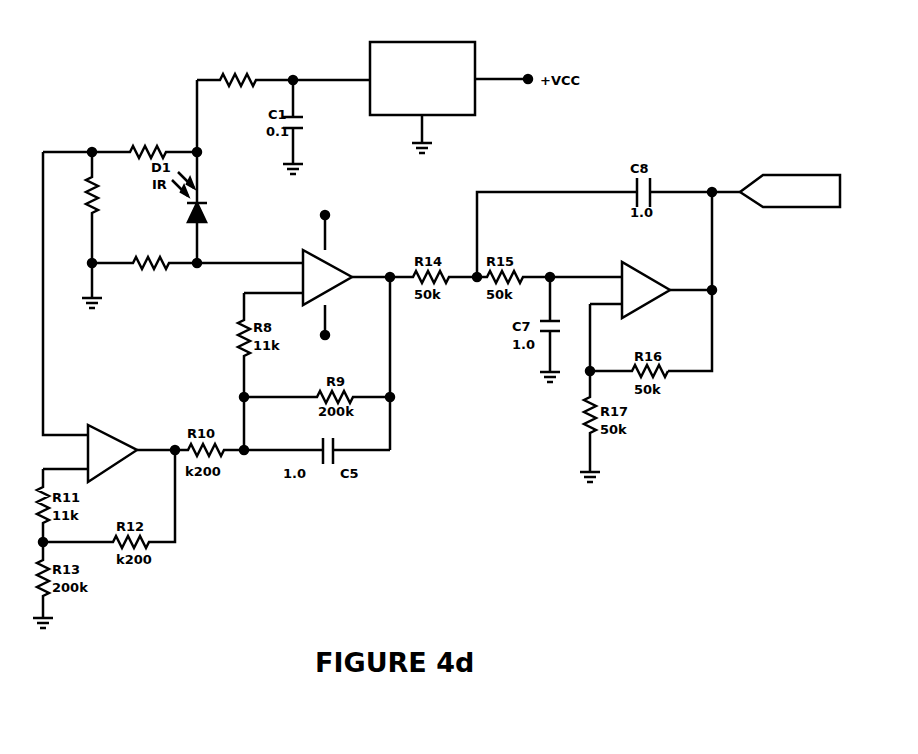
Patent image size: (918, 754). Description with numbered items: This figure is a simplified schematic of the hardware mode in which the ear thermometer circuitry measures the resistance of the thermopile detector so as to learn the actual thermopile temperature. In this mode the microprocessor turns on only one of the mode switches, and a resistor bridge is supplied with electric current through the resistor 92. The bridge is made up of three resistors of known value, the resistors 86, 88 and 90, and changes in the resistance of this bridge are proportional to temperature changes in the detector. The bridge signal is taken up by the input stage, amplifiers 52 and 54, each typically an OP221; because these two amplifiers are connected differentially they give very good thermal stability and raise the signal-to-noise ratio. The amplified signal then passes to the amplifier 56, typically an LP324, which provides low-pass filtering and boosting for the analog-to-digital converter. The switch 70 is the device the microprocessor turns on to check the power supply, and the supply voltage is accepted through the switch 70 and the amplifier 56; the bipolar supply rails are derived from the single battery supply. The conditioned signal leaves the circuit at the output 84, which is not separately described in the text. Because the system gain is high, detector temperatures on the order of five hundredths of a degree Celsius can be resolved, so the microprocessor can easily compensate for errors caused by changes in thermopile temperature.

The resistor 92 is at (238, 74).
The switch 70 is at (432, 42).
The resistor 86 is at (148, 148).
The resistor 88 is at (86, 198).
The resistor 90 is at (148, 263).
The amplifier 52 is at (325, 258).
The amplifier 54 is at (105, 430).
The amplifier 56 is at (640, 268).
The output terminal 84 is at (806, 176).